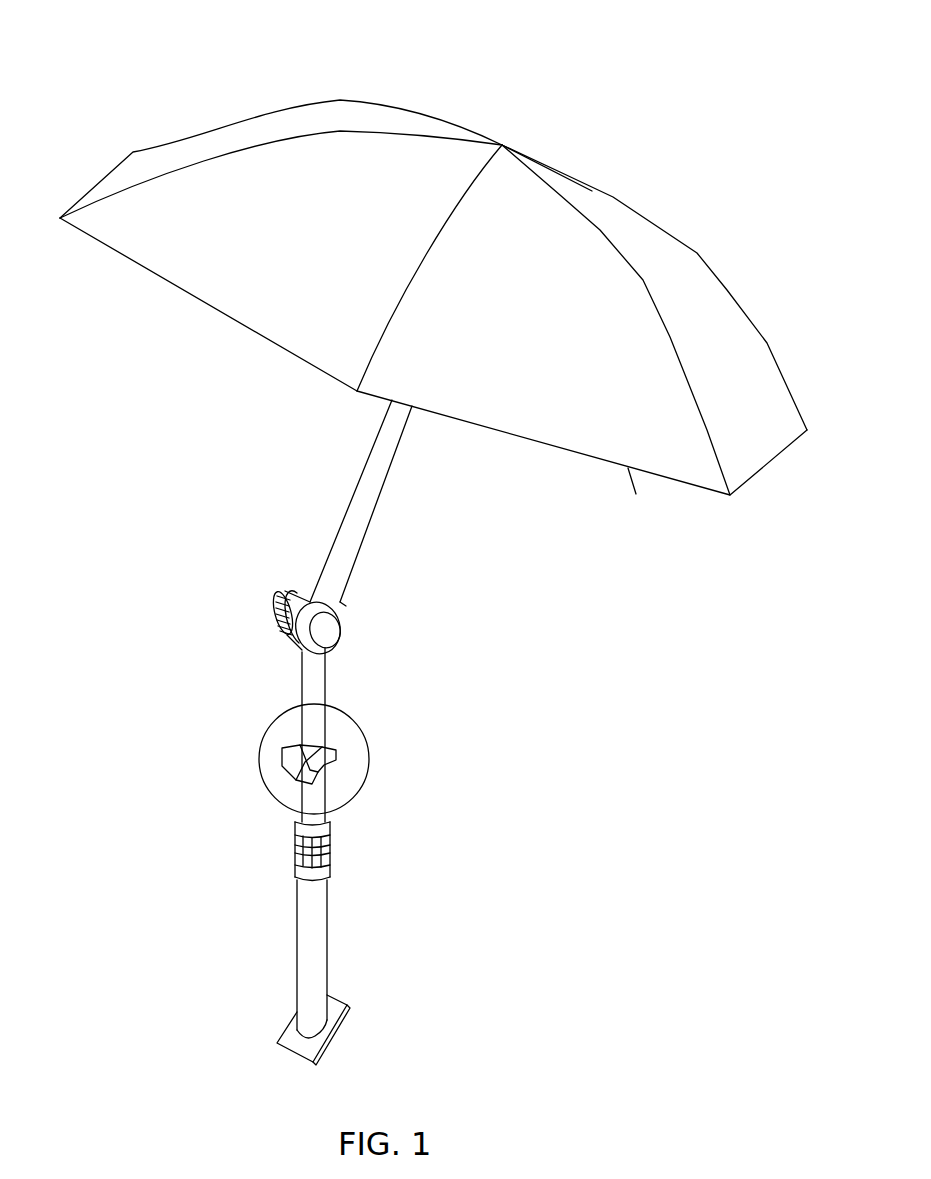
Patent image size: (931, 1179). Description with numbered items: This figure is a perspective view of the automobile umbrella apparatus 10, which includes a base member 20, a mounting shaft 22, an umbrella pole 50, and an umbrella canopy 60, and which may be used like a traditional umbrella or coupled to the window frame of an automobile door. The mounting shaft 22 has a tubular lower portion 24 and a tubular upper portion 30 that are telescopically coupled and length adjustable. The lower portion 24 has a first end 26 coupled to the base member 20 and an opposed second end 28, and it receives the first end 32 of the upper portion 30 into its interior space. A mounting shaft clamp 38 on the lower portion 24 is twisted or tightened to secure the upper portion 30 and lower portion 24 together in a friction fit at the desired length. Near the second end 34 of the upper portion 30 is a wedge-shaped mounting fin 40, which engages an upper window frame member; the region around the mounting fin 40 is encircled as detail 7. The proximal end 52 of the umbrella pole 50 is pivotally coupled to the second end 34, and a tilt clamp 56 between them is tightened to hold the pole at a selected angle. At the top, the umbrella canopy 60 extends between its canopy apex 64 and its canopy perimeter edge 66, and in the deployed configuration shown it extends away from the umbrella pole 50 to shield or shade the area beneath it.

The automobile umbrella apparatus 10 is at (75, 87).
The umbrella canopy 60 is at (697, 253).
The canopy apex 64 is at (502, 145).
The canopy perimeter edge 66 is at (660, 495).
The umbrella pole 50 is at (337, 507).
The proximal end 52 is at (343, 588).
The tilt clamp 56 is at (332, 631).
The upper portion 30 is at (288, 687).
The second end 34 is at (326, 665).
The detail circle 7 is at (370, 760).
The mounting fin 40 is at (269, 748).
The mounting shaft 22 is at (287, 837).
The first end 32 is at (329, 823).
The mounting shaft clamp 38 is at (297, 857).
The lower portion 24 is at (333, 952).
The second end 28 is at (326, 902).
The first end 26 is at (302, 1020).
The base member 20 is at (335, 1032).